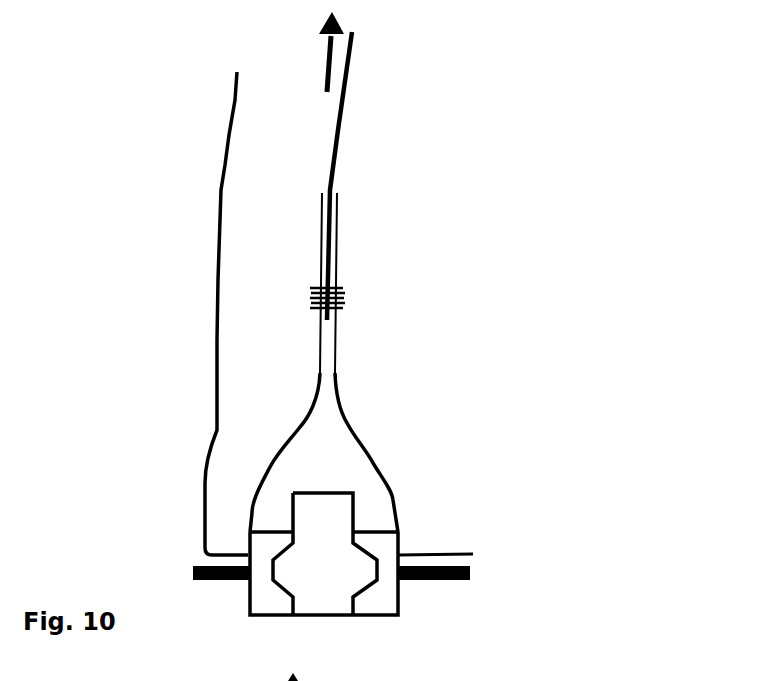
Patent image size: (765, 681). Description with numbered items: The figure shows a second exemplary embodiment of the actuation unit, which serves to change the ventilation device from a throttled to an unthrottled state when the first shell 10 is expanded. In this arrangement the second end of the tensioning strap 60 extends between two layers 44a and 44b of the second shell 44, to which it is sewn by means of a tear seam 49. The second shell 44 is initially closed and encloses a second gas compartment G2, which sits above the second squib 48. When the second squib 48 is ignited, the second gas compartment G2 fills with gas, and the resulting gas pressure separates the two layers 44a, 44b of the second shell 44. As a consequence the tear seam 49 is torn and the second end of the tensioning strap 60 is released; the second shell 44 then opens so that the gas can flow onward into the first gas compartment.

The first shell 10 is at (230, 102).
The tensioning strap 60 is at (348, 80).
The first layer of the second shell 44a is at (320, 229).
The second layer of the second shell 44b is at (337, 218).
The tear seam 49 is at (338, 290).
The second shell 44 is at (337, 368).
The second gas compartment G2 is at (322, 467).
The second squib 48 is at (333, 558).